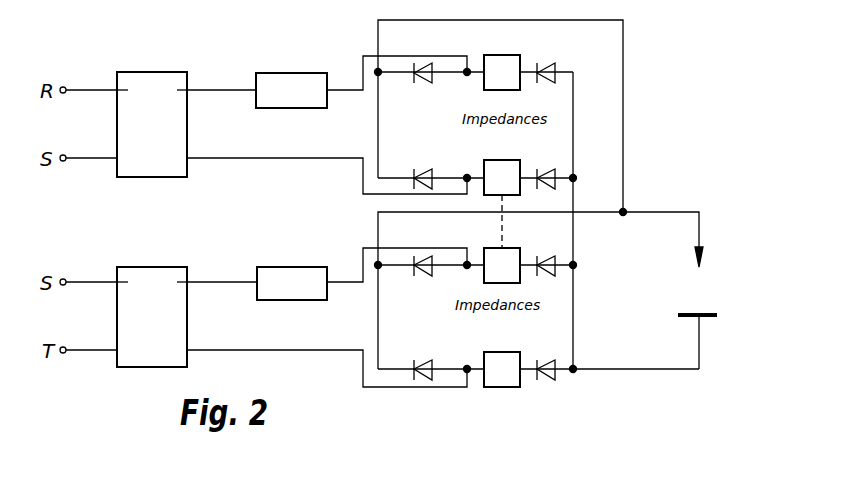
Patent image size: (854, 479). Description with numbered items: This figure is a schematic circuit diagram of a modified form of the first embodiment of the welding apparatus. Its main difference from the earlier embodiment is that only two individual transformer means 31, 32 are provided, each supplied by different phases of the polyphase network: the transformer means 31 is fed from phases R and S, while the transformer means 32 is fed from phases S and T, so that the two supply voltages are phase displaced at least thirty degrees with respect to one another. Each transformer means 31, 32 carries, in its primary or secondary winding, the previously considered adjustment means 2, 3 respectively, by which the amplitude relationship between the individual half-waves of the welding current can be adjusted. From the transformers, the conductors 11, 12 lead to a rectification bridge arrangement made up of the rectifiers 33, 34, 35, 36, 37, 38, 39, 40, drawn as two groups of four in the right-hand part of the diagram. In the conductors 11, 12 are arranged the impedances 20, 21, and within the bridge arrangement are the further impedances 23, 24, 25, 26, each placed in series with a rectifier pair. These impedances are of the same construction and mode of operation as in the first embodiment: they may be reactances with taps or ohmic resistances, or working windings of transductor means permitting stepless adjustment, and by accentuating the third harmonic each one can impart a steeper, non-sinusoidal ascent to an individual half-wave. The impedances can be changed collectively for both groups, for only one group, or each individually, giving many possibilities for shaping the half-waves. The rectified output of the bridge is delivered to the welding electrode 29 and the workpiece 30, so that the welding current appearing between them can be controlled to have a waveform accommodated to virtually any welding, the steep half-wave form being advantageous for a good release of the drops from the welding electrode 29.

The adjustment means 2 is at (152, 92).
The adjustment means 3 is at (152, 284).
The conductor 11 is at (221, 78).
The conductor 12 is at (222, 270).
The impedance 20 is at (296, 78).
The impedance 21 is at (296, 270).
The impedance 23 is at (502, 72).
The impedance 24 is at (502, 177).
The impedance 25 is at (502, 265).
The impedance 26 is at (502, 369).
The welding electrode 29 is at (713, 258).
The workpiece 30 is at (703, 328).
The transformer means 31 is at (143, 118).
The transformer means 32 is at (158, 312).
The rectifier of the rectification bridge arrangement 33 is at (418, 83).
The rectifier of the rectification bridge arrangement 34 is at (417, 169).
The rectifier of the rectification bridge arrangement 35 is at (552, 62).
The rectifier of the rectification bridge arrangement 36 is at (541, 169).
The rectifier of the rectification bridge arrangement 37 is at (416, 276).
The rectifier of the rectification bridge arrangement 38 is at (416, 361).
The rectifier of the rectification bridge arrangement 39 is at (541, 276).
The rectifier of the rectification bridge arrangement 40 is at (542, 383).